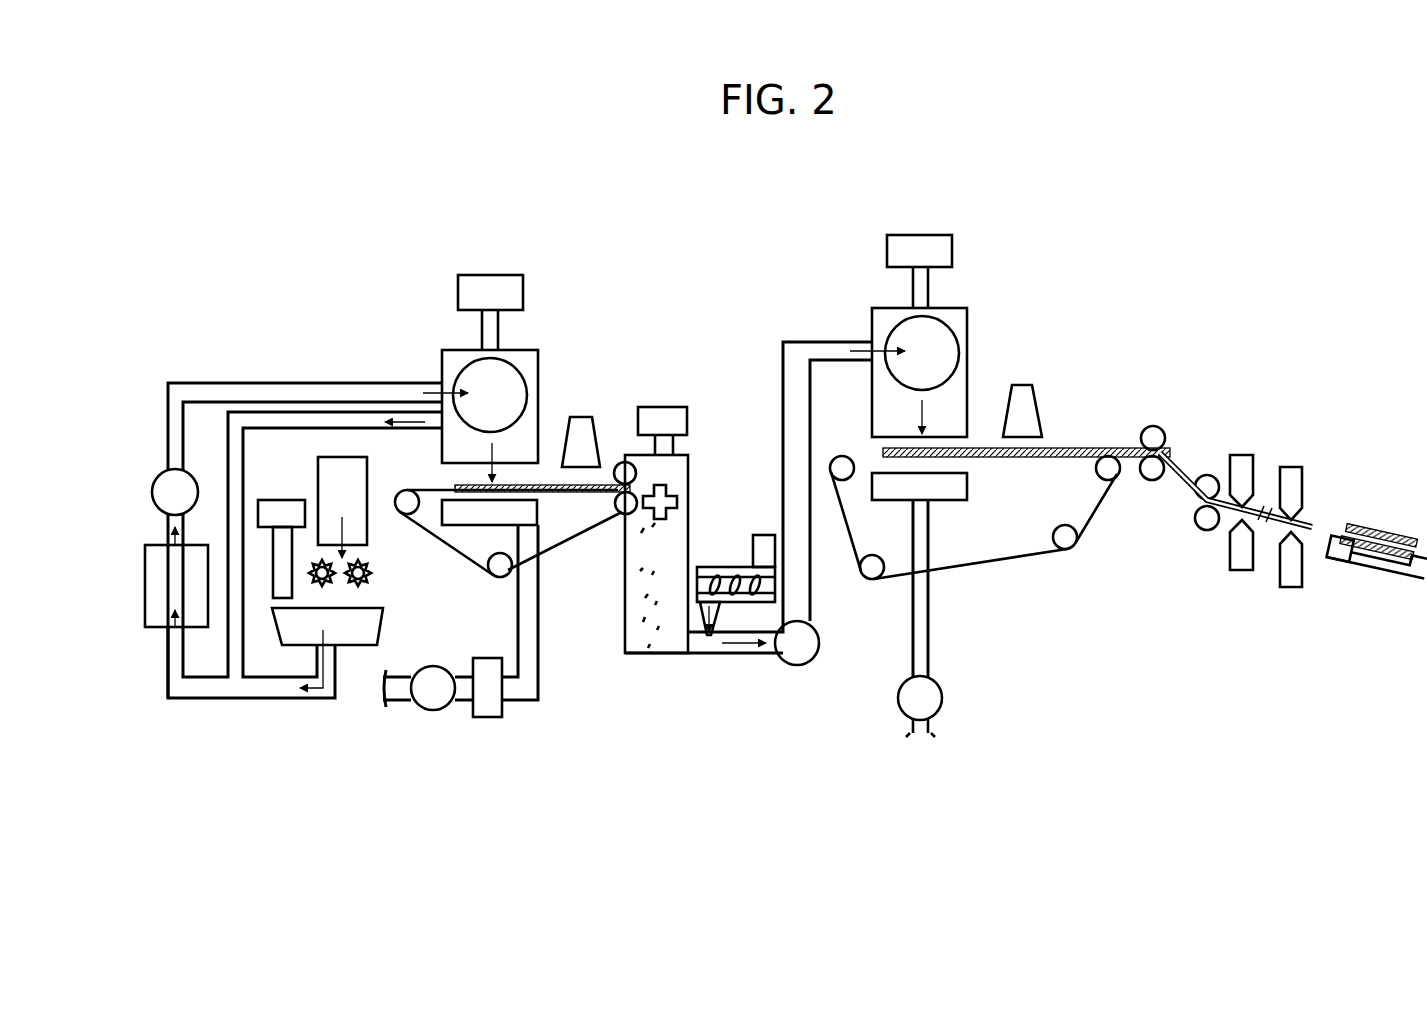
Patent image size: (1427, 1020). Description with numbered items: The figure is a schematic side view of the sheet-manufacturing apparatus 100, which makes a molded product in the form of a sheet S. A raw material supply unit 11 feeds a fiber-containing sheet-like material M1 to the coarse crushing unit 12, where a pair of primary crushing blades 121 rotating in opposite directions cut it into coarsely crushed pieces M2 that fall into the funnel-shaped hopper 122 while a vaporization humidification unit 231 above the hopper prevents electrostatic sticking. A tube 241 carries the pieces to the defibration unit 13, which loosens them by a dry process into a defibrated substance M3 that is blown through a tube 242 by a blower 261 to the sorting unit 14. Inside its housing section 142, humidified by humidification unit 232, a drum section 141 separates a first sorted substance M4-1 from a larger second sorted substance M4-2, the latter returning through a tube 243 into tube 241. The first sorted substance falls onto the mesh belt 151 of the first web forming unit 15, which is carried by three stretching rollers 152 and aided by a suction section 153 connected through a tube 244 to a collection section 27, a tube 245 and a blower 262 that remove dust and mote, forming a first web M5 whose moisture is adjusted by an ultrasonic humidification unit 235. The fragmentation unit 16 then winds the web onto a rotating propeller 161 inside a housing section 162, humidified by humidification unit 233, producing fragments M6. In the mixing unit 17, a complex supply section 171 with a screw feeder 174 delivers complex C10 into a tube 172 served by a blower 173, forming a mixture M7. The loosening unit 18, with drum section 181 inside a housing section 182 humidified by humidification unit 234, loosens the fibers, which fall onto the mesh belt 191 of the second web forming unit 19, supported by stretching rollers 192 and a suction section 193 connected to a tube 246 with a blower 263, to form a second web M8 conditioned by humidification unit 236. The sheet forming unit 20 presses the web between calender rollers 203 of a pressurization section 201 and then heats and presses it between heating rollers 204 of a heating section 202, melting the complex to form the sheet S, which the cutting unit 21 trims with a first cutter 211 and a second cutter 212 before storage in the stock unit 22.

The sheet-manufacturing apparatus 100 is at (1185, 210).
The raw material supply unit 11 is at (332, 456).
The coarse crushing unit 12 is at (362, 596).
The primary crushing blades 121 is at (356, 580).
The hopper 122 is at (376, 626).
The defibration unit 13 is at (145, 567).
The sorting unit 14 is at (531, 346).
The drum section 141 is at (525, 376).
The housing section 142 is at (510, 350).
The first web forming unit 15 is at (506, 533).
The mesh belt 151 is at (570, 546).
The stretching rollers 152 is at (403, 498).
The suction section 153 is at (538, 510).
The fragmentation unit 16 is at (670, 537).
The propeller 161 is at (672, 502).
The housing section 162 is at (630, 654).
The mixing unit 17 is at (773, 530).
The complex supply section 171 is at (740, 568).
The tube 172 is at (812, 615).
The blower 173 is at (807, 662).
The screw feeder 174 is at (712, 571).
The loosening unit 18 is at (962, 312).
The drum section 181 is at (952, 339).
The housing section 182 is at (958, 306).
The second web forming unit 19 is at (991, 529).
The mesh belt 191 is at (980, 566).
The stretching rollers 192 is at (840, 464).
The suction section 193 is at (968, 488).
The sheet forming unit 20 is at (1180, 481).
The pressurization section 201 is at (1156, 416).
The heating section 202 is at (1171, 542).
The calender rollers 203 is at (1212, 393).
The heating rollers 204 is at (1224, 572).
The cutting unit 21 is at (1298, 472).
The first cutter 211 is at (1258, 448).
The second cutter 212 is at (1308, 462).
The stock unit 22 is at (1394, 590).
The humidification unit 231 is at (275, 499).
The humidification unit 232 is at (494, 273).
The humidification unit 233 is at (662, 404).
The humidification unit 234 is at (924, 232).
The humidification unit 235 is at (582, 415).
The humidification unit 236 is at (1022, 383).
The tube 241 is at (258, 700).
The tube 242 is at (218, 381).
The tube 243 is at (298, 410).
The tube 244 is at (540, 660).
The tube 245 is at (460, 713).
The tube 246 is at (930, 655).
The blower 261 is at (160, 472).
The blower 262 is at (419, 710).
The blower 263 is at (943, 698).
The collection section 27 is at (489, 720).
The sheet-like material M1 is at (346, 534).
The coarsely crushed pieces M2 is at (173, 637).
The defibrated substance M3 is at (165, 547).
The first sorted substance M4-1 is at (490, 453).
The second sorted substance M4-2 is at (417, 402).
The first web M5 is at (622, 463).
The fragment M6 is at (650, 555).
The mixture M7 is at (732, 654).
The second web M8 is at (990, 445).
The complex C10 is at (711, 614).
The sheet S is at (1228, 504).